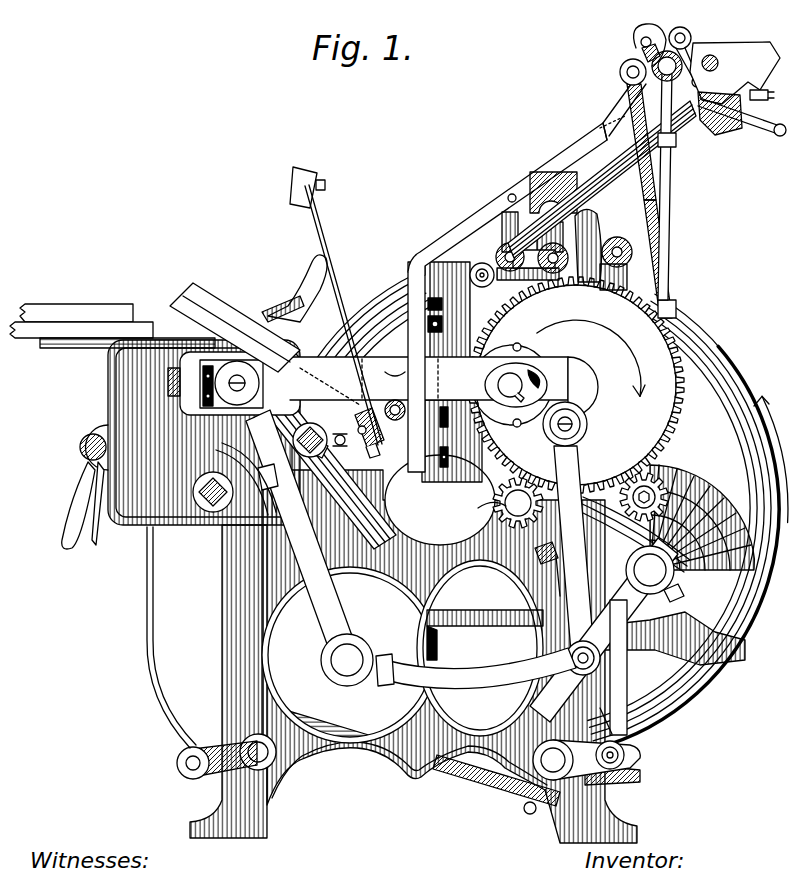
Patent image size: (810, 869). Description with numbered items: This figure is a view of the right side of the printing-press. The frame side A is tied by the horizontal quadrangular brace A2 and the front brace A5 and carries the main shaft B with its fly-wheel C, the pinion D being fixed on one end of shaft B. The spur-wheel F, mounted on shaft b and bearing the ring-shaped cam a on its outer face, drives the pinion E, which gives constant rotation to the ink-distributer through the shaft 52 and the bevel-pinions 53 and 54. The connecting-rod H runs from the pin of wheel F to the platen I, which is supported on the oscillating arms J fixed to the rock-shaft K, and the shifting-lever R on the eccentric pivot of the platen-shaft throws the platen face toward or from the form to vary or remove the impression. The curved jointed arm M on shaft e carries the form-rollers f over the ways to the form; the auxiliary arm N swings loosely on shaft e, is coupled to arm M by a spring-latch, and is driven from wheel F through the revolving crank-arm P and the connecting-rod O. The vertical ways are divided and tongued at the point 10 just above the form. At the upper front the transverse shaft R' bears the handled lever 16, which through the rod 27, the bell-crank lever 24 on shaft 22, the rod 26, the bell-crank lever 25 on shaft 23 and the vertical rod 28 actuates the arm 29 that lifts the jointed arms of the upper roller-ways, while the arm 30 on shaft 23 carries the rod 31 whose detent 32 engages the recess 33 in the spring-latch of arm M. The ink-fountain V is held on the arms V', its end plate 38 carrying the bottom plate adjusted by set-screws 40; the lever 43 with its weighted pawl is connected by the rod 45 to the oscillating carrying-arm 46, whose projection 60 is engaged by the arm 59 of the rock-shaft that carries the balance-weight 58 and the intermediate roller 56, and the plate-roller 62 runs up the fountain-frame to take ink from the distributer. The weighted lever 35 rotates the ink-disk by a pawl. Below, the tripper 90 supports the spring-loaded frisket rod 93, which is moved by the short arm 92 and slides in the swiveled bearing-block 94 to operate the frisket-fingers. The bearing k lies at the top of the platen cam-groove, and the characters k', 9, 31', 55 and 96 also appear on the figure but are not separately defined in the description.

The frame side A is at (426, 552).
The horizontal quadrangular brace A2 is at (480, 648).
The front brace A5 is at (210, 513).
The main shaft B is at (518, 503).
The fly-wheel C is at (733, 652).
The pinion D is at (492, 514).
The pinion E is at (658, 476).
The spur-wheel F is at (576, 385).
The connecting-rod H is at (368, 383).
The platen I is at (183, 296).
The oscillating arm J is at (302, 538).
The rock-shaft K is at (336, 668).
The curved jointed arm M is at (505, 680).
The auxiliary arm N is at (604, 630).
The connecting-rod O is at (580, 478).
The revolving arm P is at (559, 421).
The shifting-lever R is at (294, 285).
The transverse shaft R' is at (75, 447).
The ink-fountain V is at (735, 63).
The arm V' is at (602, 179).
The cam a is at (515, 344).
The shaft b is at (583, 387).
The shaft e is at (655, 574).
The form-roller f is at (394, 428).
The horizontal bearing k is at (416, 367).
The inclined bar k' is at (507, 199).
The bar end 9 is at (608, 118).
The tongued-and-grooved point 10 is at (408, 294).
The handled lever 16 is at (68, 519).
The transverse shaft 22 is at (266, 762).
The transverse shaft 23 is at (540, 770).
The bell-crank lever 24 is at (192, 780).
The bell-crank lever 25 is at (642, 776).
The rod 26 is at (322, 724).
The rod 27 is at (147, 688).
The vertical rod 28 is at (628, 656).
The arm 29 is at (619, 244).
The arm 30 is at (642, 751).
The rod 31 is at (530, 578).
The strip 31' is at (595, 721).
The detent 32 is at (535, 552).
The recess 33 is at (702, 517).
The weighted lever 35 is at (592, 236).
The end plate 38 is at (721, 60).
The set-screw 40 is at (762, 95).
The lever 43 is at (780, 124).
The rod 45 is at (735, 138).
The carrying-arm 46 is at (665, 262).
The shaft 52 is at (668, 212).
The bevel-pinion 53 is at (678, 74).
The bevel-pinion 54 is at (651, 53).
The hook 55 is at (648, 37).
The intermediate roller 56 is at (690, 32).
The balance-weight 58 is at (743, 127).
The arm 59 is at (677, 142).
The projection 60 is at (638, 112).
The plate-roller 62 is at (620, 72).
The tripper 90 is at (246, 479).
The short arm 92 is at (378, 446).
The frisket-operating rod 93 is at (342, 446).
The swiveled bearing-block 94 is at (320, 450).
The pivot block 96 is at (300, 449).